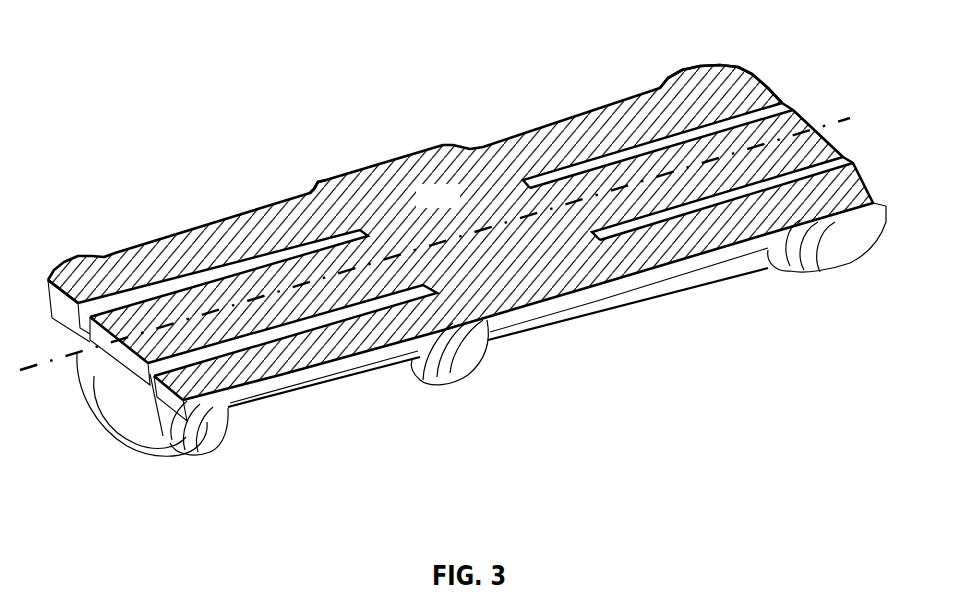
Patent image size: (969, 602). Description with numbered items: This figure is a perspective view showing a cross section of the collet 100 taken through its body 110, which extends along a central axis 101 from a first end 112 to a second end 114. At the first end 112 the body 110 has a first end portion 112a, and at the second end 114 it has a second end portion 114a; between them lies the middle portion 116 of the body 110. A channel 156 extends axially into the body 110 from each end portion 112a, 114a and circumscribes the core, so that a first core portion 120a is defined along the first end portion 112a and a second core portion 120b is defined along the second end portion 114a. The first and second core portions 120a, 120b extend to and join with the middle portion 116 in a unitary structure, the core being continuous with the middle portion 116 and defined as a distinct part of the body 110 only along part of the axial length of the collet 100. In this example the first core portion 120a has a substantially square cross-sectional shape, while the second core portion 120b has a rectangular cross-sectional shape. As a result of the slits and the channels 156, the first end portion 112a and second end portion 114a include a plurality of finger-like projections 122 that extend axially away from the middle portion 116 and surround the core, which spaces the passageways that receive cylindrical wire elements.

The collet 100 is at (464, 245).
The central axis 101 is at (879, 110).
The body 110 is at (464, 245).
The first end 112 is at (88, 379).
The first end portion 112a is at (128, 247).
The second end 114 is at (775, 89).
The second end portion 114a is at (637, 73).
The middle portion 116 is at (424, 205).
The first core portion 120a is at (285, 272).
The second core portion 120b is at (607, 173).
The finger-like projections 122 is at (227, 240).
The channel 156 is at (465, 237).